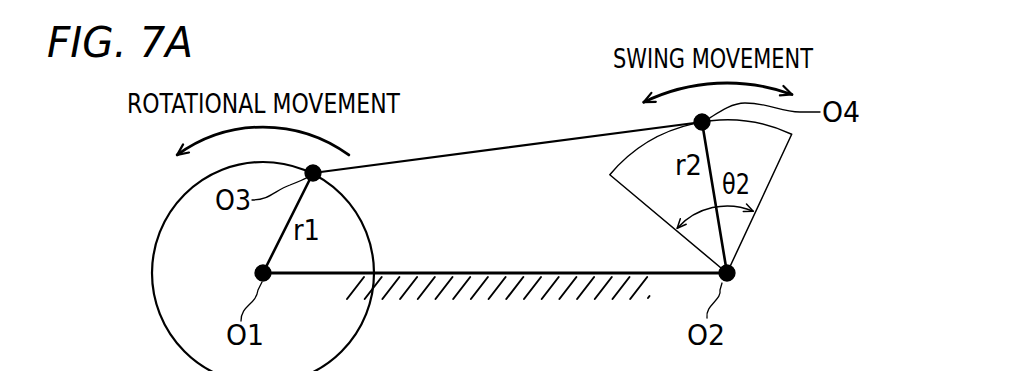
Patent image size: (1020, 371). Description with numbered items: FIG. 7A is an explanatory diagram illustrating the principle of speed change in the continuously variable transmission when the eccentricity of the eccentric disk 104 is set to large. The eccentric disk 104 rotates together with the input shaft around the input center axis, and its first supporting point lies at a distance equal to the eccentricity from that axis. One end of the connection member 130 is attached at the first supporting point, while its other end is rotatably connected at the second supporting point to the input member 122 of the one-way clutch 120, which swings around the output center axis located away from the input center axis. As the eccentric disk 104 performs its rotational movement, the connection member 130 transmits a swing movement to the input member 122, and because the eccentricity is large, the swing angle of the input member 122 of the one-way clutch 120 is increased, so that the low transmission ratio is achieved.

The eccentric disk 104 is at (173, 302).
The connection member 130 is at (481, 151).
The one-way clutch 120 is at (787, 191).
The input member 122 is at (722, 244).